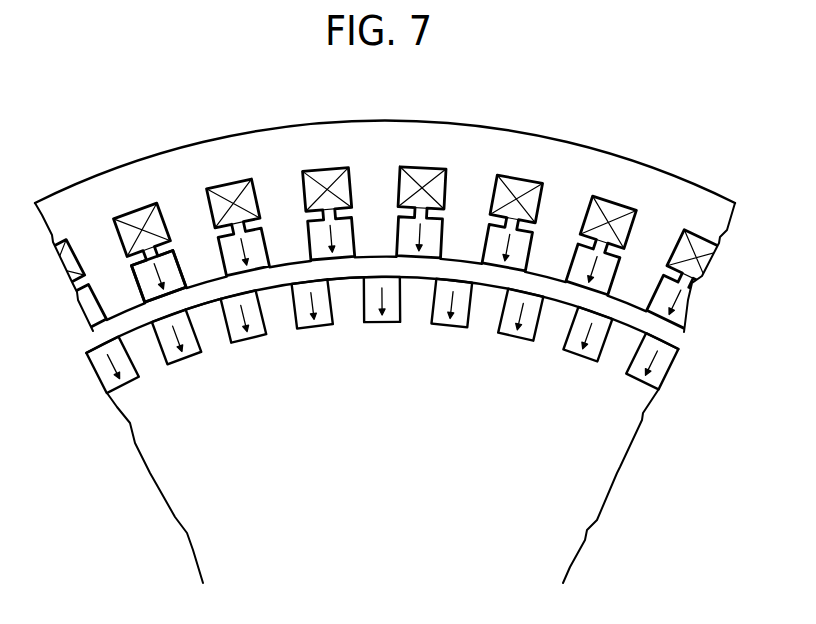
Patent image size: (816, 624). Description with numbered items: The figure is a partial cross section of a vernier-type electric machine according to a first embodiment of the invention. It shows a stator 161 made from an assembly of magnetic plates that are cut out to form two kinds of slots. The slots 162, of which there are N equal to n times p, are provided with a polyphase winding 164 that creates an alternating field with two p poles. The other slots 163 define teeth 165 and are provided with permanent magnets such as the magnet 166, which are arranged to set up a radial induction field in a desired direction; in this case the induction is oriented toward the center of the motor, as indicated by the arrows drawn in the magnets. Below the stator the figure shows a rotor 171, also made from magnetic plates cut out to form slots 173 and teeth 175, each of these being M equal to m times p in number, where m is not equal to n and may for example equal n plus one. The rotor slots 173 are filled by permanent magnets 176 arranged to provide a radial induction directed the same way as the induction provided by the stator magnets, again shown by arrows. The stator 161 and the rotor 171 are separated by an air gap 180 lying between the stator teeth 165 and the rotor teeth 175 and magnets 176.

The stator 161 is at (365, 162).
The slots 162 is at (118, 237).
The slots 163 is at (153, 300).
The polyphase winding 164 is at (157, 222).
The teeth 165 is at (284, 262).
The permanent magnet 166 is at (163, 275).
The rotor 171 is at (202, 473).
The slots 173 is at (323, 278).
The teeth 175 is at (202, 315).
The permanent magnets 176 is at (305, 322).
The air gap 180 is at (477, 272).